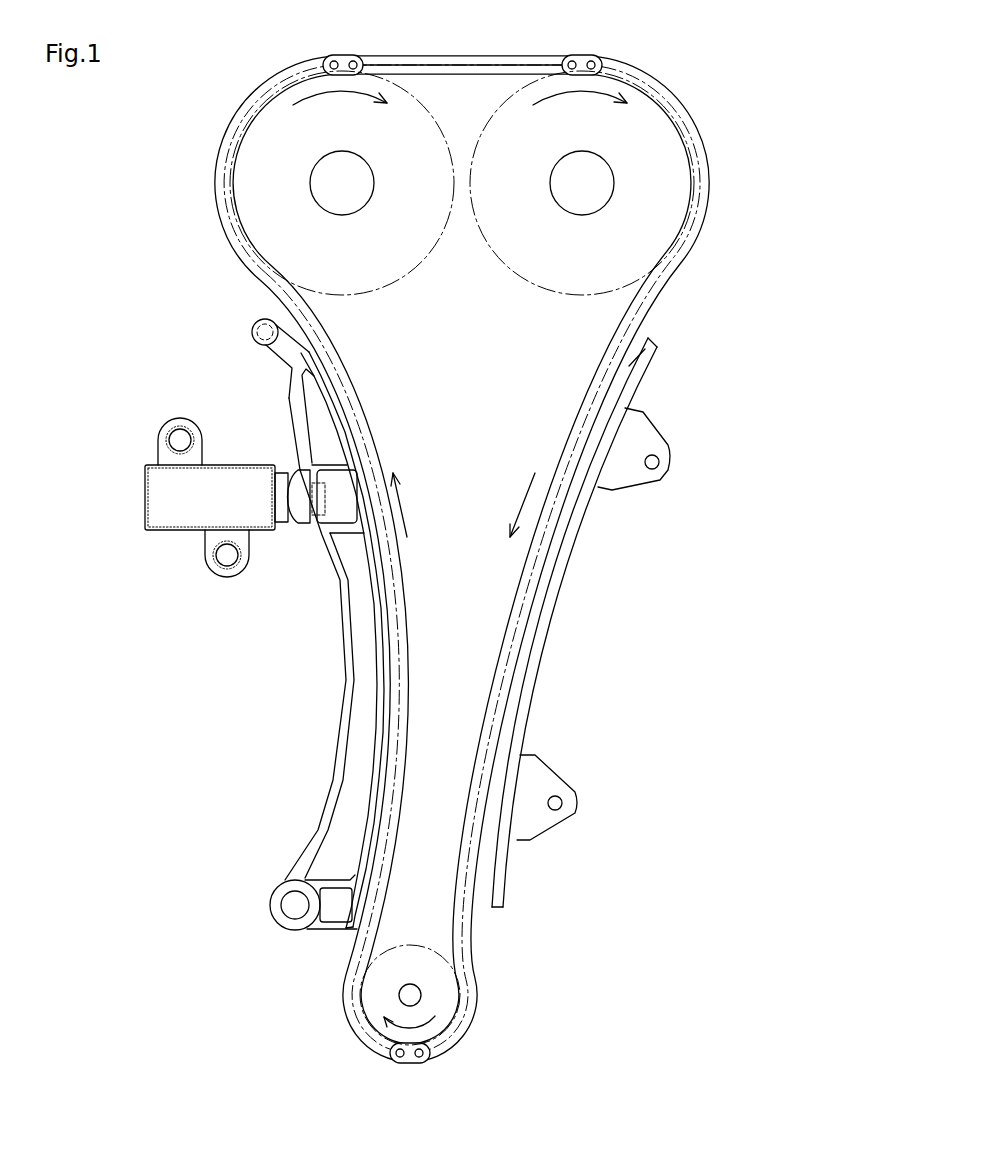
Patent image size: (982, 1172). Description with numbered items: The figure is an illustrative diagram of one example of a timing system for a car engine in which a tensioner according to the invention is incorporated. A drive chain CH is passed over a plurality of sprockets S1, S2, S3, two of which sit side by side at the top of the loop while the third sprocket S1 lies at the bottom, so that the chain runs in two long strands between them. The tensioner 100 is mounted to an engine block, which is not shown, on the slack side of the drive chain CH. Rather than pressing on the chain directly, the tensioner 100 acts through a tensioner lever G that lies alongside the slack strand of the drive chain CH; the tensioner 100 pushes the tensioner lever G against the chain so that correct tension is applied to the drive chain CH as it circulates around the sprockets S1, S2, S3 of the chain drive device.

The tensioner 100 is at (170, 417).
The drive chain CH is at (660, 292).
The tensioner lever G is at (361, 778).
The sprocket S1 is at (437, 997).
The sprocket S2 is at (262, 182).
The sprocket S3 is at (660, 190).